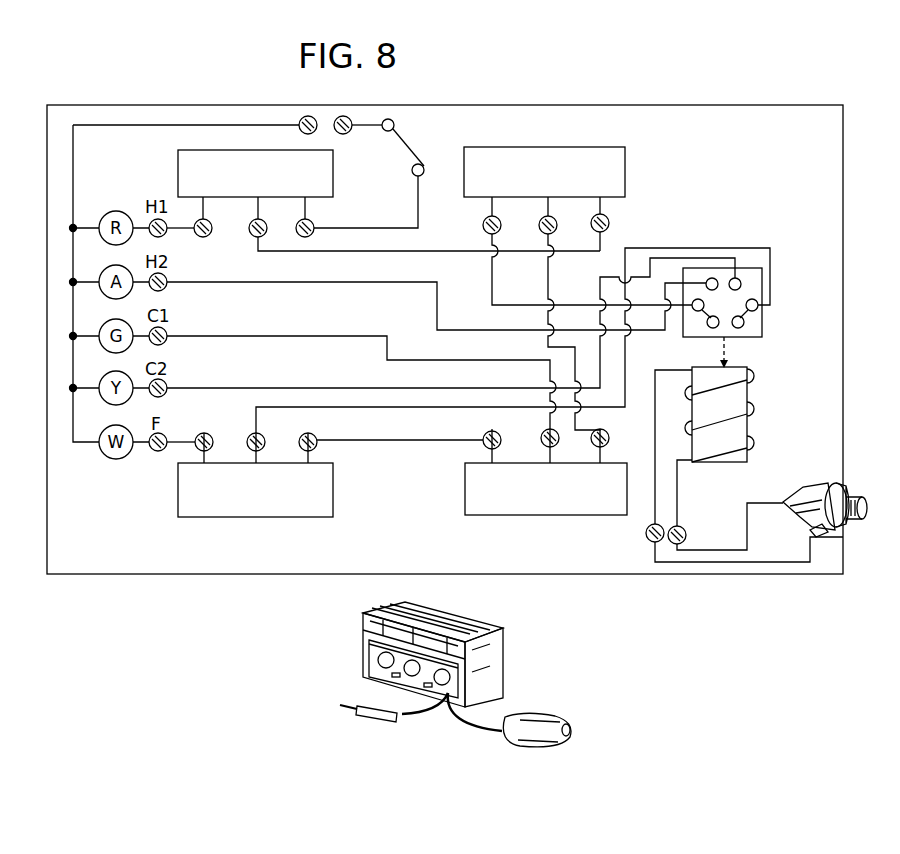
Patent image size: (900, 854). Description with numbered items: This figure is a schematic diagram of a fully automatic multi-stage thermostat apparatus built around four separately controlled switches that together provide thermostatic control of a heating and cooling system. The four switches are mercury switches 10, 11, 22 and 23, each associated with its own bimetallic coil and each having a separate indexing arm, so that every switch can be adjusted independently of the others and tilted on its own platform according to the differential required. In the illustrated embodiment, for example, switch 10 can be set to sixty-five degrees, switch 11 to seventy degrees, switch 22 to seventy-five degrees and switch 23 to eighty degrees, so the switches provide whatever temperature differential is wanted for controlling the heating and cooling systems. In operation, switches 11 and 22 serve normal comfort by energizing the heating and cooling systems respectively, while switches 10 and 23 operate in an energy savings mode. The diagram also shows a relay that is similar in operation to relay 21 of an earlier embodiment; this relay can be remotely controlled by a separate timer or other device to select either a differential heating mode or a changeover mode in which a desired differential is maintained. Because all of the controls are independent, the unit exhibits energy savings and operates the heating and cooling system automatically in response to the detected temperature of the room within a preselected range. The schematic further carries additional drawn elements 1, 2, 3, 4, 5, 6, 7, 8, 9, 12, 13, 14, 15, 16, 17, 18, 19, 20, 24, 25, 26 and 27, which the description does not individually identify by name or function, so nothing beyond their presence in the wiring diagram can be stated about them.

The screw terminal 1 is at (301, 126).
The screw terminal 2 is at (349, 132).
The switch 3 is at (402, 120).
The screw terminal 4 is at (210, 234).
The screw terminal 5 is at (263, 236).
The screw terminal 6 is at (311, 236).
The screw terminal 7 is at (499, 232).
The screw terminal 8 is at (555, 232).
The screw terminal 9 is at (607, 228).
The mercury switch 10 is at (188, 150).
The mercury switch 11 is at (583, 147).
The relay 12 is at (753, 268).
The relay contact 13 is at (693, 312).
The relay contact 14 is at (758, 312).
The relay coil 15 is at (756, 414).
The screw terminal 16 is at (218, 427).
The screw terminal 17 is at (264, 440).
The screw terminal 18 is at (320, 430).
The screw terminal 19 is at (500, 446).
The screw terminal 20 is at (556, 446).
The relay 21 is at (612, 424).
The mercury switch 22 is at (294, 518).
The mercury switch 23 is at (578, 516).
The screw terminal 24 is at (648, 541).
The screw terminal 25 is at (683, 529).
The thermostat 26 is at (666, 105).
The plug connector 27 is at (855, 495).